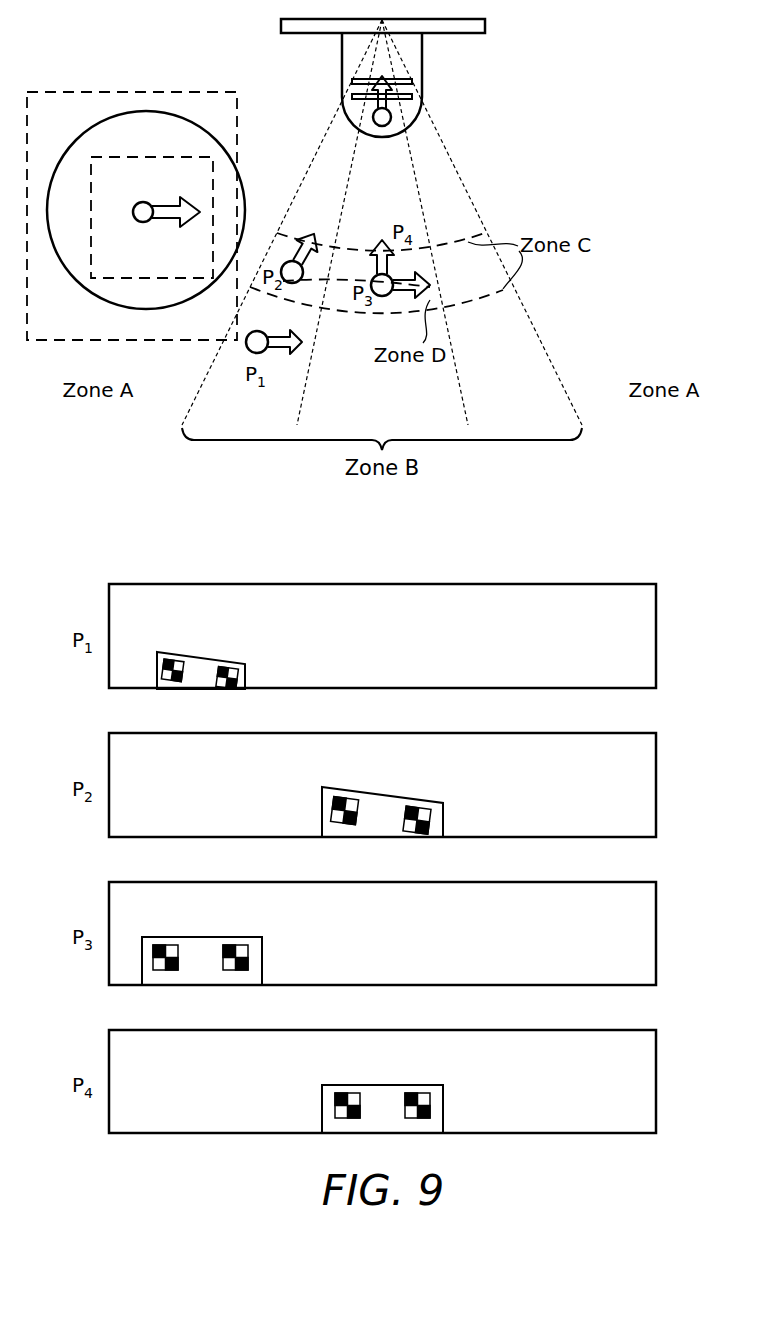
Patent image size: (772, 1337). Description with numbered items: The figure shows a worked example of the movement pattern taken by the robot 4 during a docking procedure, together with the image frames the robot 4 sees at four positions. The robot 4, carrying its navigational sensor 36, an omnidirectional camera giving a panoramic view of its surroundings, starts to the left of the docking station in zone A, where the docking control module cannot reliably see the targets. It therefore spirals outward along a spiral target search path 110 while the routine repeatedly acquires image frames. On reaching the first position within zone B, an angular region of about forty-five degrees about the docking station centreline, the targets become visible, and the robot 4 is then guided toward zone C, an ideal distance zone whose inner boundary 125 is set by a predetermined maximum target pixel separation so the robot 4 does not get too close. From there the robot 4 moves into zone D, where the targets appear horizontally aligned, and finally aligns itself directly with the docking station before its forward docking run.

The robot 4 is at (86, 131).
The navigational sensor 36 is at (140, 223).
The spiral target search path 110 is at (197, 92).
The inner boundary of zone C 125 is at (452, 243).